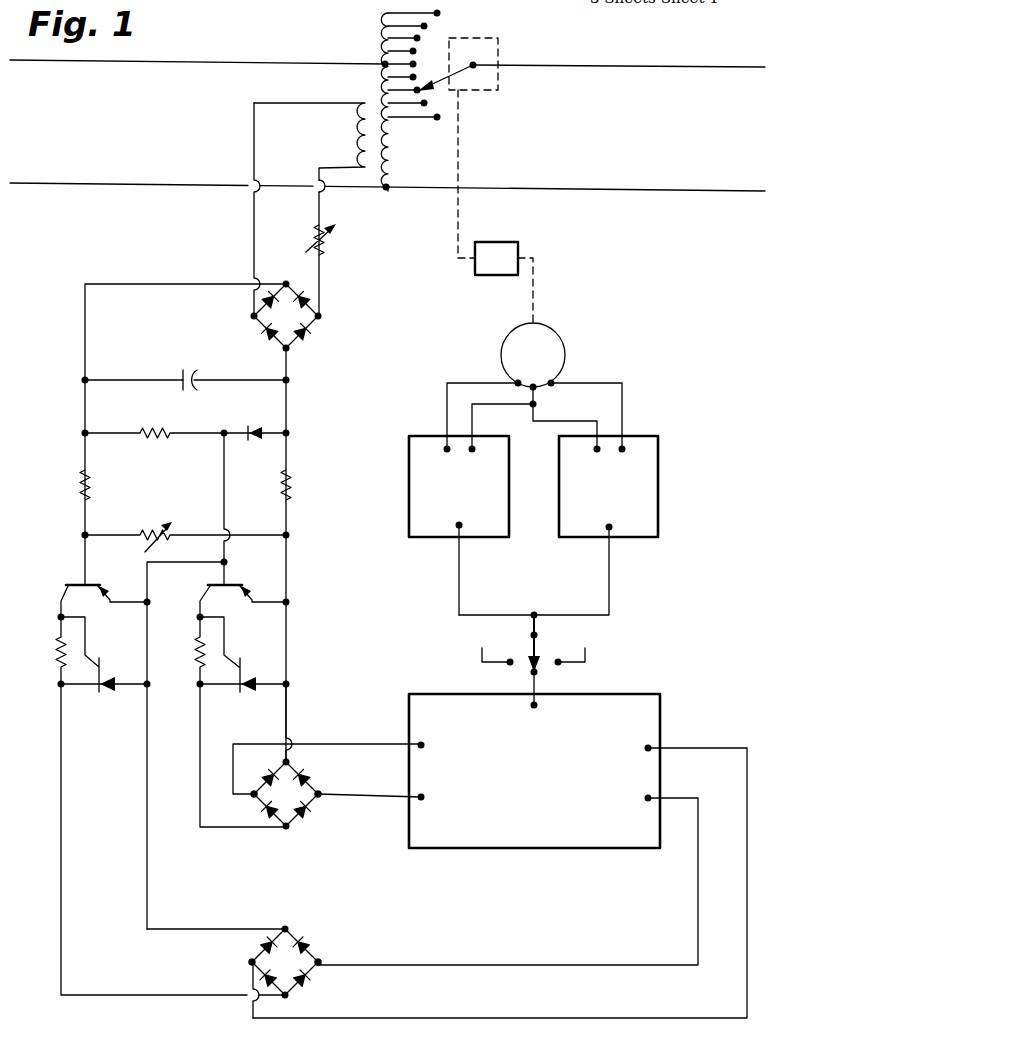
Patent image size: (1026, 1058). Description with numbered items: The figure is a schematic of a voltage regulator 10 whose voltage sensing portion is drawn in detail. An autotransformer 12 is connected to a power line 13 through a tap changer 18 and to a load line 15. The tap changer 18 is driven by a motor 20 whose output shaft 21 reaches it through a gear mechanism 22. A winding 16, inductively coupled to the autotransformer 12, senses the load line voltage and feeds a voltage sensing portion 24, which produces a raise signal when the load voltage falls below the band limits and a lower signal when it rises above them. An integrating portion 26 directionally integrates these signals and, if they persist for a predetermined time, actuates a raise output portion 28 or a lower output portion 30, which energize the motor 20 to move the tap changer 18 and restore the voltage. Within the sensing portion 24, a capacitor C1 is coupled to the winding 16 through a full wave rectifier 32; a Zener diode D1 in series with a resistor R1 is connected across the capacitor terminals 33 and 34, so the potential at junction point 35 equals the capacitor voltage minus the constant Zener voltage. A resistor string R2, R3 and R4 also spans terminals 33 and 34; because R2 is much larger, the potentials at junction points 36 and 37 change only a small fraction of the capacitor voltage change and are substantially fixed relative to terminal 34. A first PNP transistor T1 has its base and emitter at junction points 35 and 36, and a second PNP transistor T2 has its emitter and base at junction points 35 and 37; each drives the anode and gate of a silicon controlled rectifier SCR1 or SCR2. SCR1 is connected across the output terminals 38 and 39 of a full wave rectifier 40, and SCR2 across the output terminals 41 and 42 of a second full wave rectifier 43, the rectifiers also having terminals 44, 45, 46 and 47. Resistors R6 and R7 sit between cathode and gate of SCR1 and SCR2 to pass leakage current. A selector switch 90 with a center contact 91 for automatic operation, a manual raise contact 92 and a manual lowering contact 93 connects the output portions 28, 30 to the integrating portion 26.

The voltage regulator 10 is at (380, 52).
The autotransformer 12 is at (390, 162).
The power line 13 is at (689, 67).
The load line 15 is at (125, 60).
The winding 16 is at (360, 140).
The tap changer 18 is at (494, 38).
The motor 20 is at (565, 350).
The output shaft 21 is at (533, 298).
The gear mechanism 22 is at (518, 248).
The voltage sensing portion 24 is at (185, 523).
The integrating portion 26 is at (551, 846).
The raise output portion 28 is at (409, 448).
The lower output portion 30 is at (658, 456).
The full wave rectifier 32 is at (294, 241).
The terminal 33 is at (286, 380).
The terminal 34 is at (85, 380).
The junction point 35 is at (224, 433).
The junction point 36 is at (286, 535).
The junction point 37 is at (85, 535).
The output terminal 38 is at (286, 684).
The output terminal 39 is at (200, 684).
The full wave rectifier 40 is at (327, 757).
The output terminal 41 is at (147, 684).
The output terminal 42 is at (61, 684).
The second full wave rectifier 43 is at (234, 972).
The bridge terminal 44 is at (320, 797).
The bridge terminal 45 is at (251, 799).
The bridge terminal 46 is at (320, 965).
The bridge terminal 47 is at (252, 962).
The selector switch 90 is at (531, 647).
The center contact 91 is at (538, 672).
The manual raise contact 92 is at (508, 667).
The manual lowering contact 93 is at (561, 666).
The capacitor C1 is at (191, 368).
The resistor R1 is at (153, 426).
The resistor R2 is at (292, 492).
The resistor R3 is at (156, 528).
The resistor R4 is at (80, 487).
The resistor R6 is at (198, 654).
The resistor R7 is at (56, 648).
The Zener diode D1 is at (256, 430).
The first PNP transistor T1 is at (252, 594).
The second PNP transistor T2 is at (112, 595).
The silicon controlled rectifier SCR1 is at (244, 680).
The second silicon controlled rectifier SCR2 is at (104, 680).